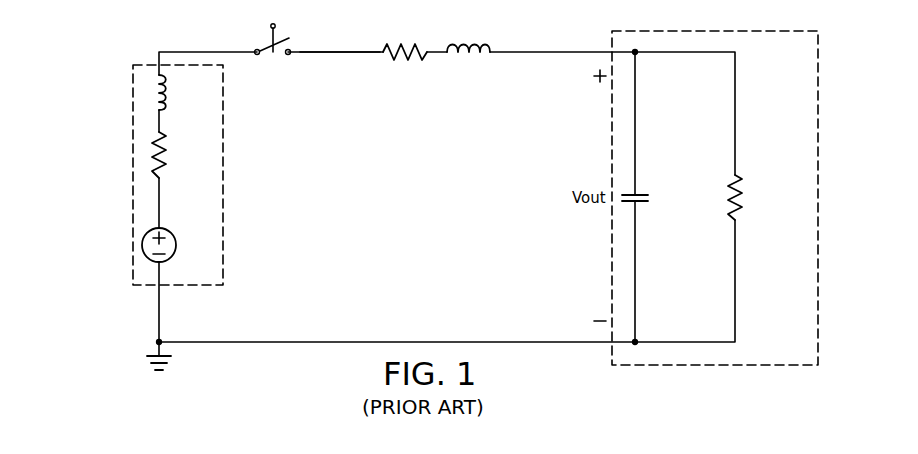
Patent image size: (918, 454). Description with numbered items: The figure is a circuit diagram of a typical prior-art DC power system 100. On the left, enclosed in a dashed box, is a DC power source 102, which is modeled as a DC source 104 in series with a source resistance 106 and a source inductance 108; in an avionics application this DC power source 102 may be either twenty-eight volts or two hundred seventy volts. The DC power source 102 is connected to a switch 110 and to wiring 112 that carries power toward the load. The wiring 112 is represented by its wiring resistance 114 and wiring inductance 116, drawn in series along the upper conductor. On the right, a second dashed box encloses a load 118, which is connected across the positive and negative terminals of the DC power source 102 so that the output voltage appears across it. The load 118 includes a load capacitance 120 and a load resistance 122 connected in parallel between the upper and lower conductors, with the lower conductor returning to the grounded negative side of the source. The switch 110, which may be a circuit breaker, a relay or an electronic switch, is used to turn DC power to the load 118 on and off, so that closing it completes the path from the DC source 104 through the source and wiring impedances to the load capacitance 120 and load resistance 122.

The DC power system 100 is at (118, 92).
The DC power source 102 is at (223, 158).
The DC source Vin 104 is at (165, 240).
The source resistance Rs 106 is at (152, 160).
The source inductance Ls 108 is at (163, 112).
The switch 110 is at (265, 46).
The wiring 112 is at (340, 52).
The wiring resistance Rw 114 is at (404, 62).
The wiring inductance Lw 116 is at (468, 60).
The load 118 is at (636, 30).
The load capacitance 120 is at (638, 192).
The load resistance 122 is at (738, 180).